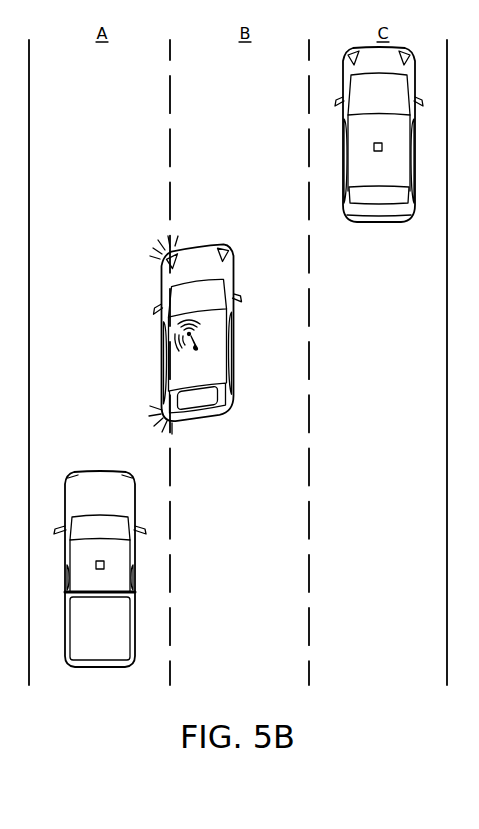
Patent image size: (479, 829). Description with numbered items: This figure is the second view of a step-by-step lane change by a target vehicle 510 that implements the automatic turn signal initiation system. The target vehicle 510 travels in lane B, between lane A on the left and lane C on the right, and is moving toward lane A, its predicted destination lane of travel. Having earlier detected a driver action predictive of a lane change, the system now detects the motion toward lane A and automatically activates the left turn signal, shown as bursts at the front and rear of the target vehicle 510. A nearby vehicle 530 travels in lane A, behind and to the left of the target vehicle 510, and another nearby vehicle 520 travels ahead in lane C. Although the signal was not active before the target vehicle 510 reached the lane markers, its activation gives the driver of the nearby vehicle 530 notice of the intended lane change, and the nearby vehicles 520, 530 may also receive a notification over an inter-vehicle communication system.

The target vehicle 510 is at (208, 421).
The nearby vehicle 520 is at (379, 222).
The nearby vehicle 530 is at (98, 667).